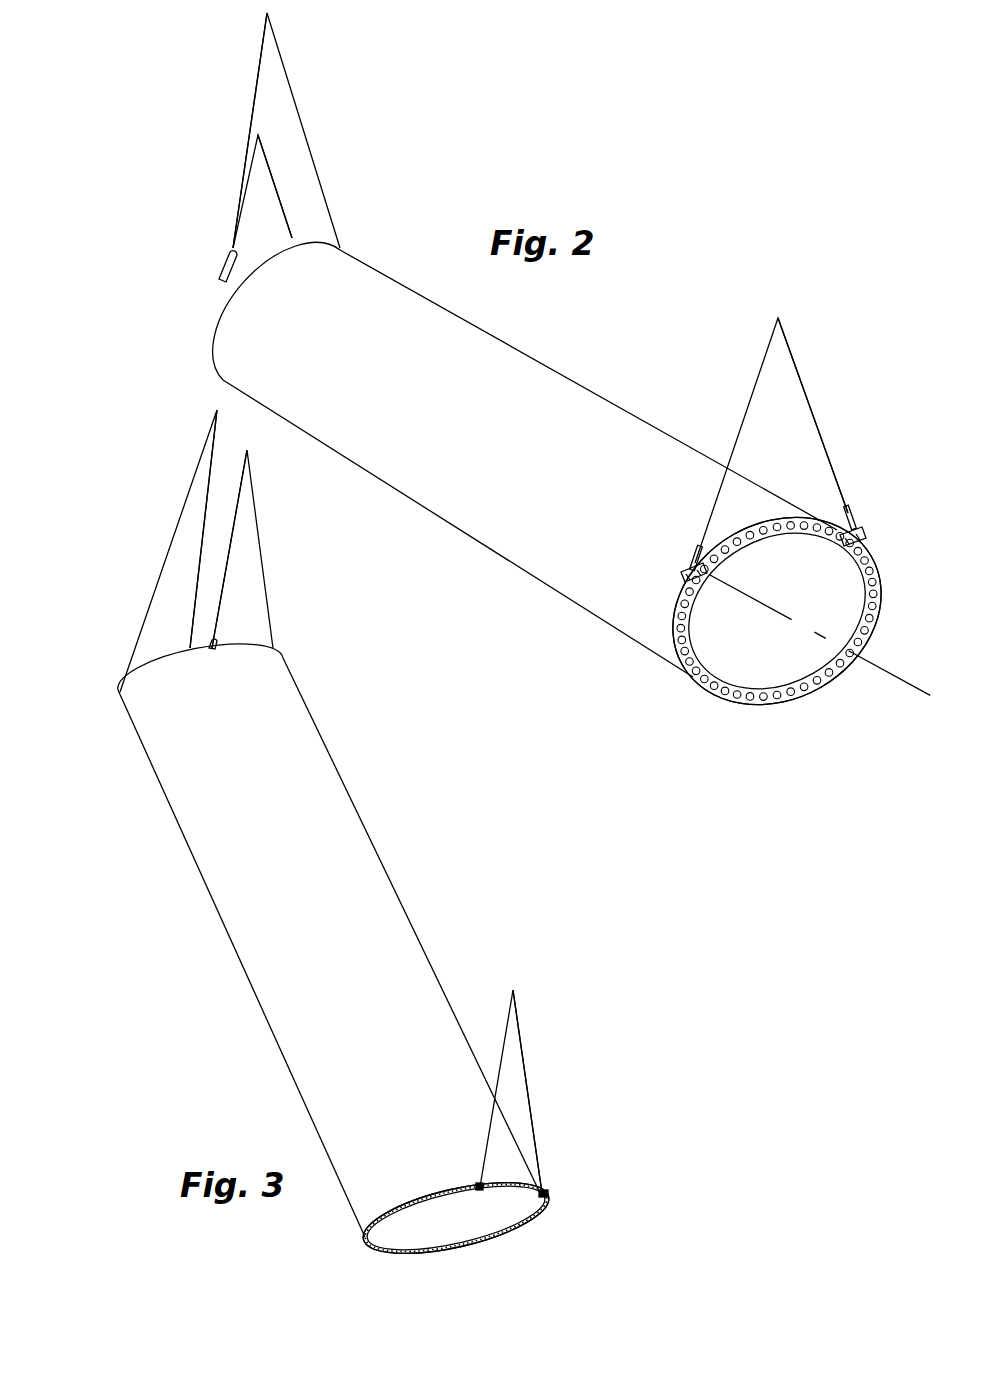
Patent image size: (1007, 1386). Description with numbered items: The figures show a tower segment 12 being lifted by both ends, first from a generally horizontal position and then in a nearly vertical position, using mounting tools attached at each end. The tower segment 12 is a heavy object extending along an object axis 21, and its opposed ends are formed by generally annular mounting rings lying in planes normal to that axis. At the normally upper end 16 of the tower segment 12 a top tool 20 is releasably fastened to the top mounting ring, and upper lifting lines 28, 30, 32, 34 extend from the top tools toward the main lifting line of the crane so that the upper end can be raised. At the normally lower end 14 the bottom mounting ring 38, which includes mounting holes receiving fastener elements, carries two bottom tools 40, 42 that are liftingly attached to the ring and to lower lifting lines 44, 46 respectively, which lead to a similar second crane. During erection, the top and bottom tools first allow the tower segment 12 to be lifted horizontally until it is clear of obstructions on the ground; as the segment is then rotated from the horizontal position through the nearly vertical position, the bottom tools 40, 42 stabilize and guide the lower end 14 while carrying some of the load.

In FIG. 2, the tower segment 12 is at (432, 511).
In FIG. 3, the tower segment 12 is at (281, 1050).
In FIG. 2, the normally lower end 14 is at (730, 700).
In FIG. 3, the normally lower end 14 is at (380, 1240).
In FIG. 2, the normally upper end 16 is at (198, 328).
In FIG. 3, the normally upper end 16 is at (168, 658).
In FIG. 2, the top tool 20 is at (226, 254).
In FIG. 3, the top tool 20 is at (218, 650).
In FIG. 2, the object axis 21 is at (906, 686).
In FIG. 2, the upper lifting line 28 is at (301, 118).
In FIG. 3, the upper lifting line 28 is at (264, 577).
In FIG. 2, the upper lifting line 30 is at (243, 183).
In FIG. 3, the upper lifting line 30 is at (187, 495).
In FIG. 2, the upper lifting line 32 is at (271, 175).
In FIG. 3, the upper lifting line 32 is at (201, 548).
In FIG. 2, the upper lifting line 34 is at (248, 112).
In FIG. 3, the upper lifting line 34 is at (220, 613).
In FIG. 2, the bottom mounting ring 38 is at (693, 672).
In FIG. 3, the bottom mounting ring 38 is at (433, 1197).
In FIG. 2, the bottom tool 40 is at (691, 566).
In FIG. 3, the bottom tool 40 is at (478, 1183).
In FIG. 2, the bottom tool 42 is at (858, 520).
In FIG. 3, the bottom tool 42 is at (547, 1187).
In FIG. 2, the lower lifting line 44 is at (750, 400).
In FIG. 3, the lower lifting line 44 is at (503, 1042).
In FIG. 2, the lower lifting line 46 is at (817, 429).
In FIG. 3, the lower lifting line 46 is at (520, 1040).